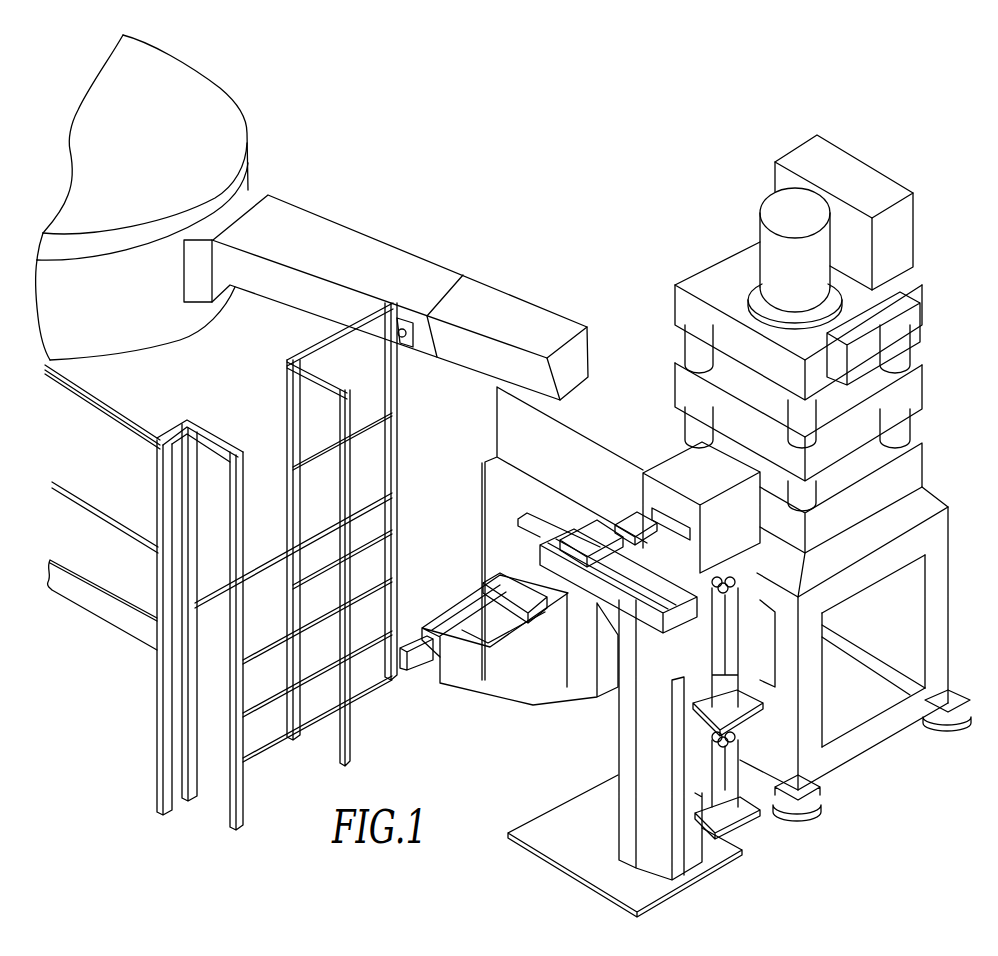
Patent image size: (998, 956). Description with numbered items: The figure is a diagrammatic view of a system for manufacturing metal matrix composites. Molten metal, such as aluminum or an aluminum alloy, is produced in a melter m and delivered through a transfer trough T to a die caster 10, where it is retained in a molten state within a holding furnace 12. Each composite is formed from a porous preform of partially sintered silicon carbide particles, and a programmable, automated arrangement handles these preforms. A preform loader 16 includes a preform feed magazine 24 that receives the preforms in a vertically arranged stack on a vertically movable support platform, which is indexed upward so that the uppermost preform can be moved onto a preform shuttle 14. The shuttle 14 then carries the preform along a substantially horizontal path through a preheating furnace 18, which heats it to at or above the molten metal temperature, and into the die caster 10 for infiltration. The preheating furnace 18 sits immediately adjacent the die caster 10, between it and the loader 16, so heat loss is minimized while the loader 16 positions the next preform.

The melter m is at (234, 87).
The transfer trough T is at (384, 224).
The die caster 10 is at (934, 276).
The holding furnace 12 is at (622, 365).
The preform shuttle 14 is at (446, 594).
The preform loader 16 is at (603, 722).
The preheating furnace 18 is at (648, 453).
The preform feed magazine 24 is at (757, 636).